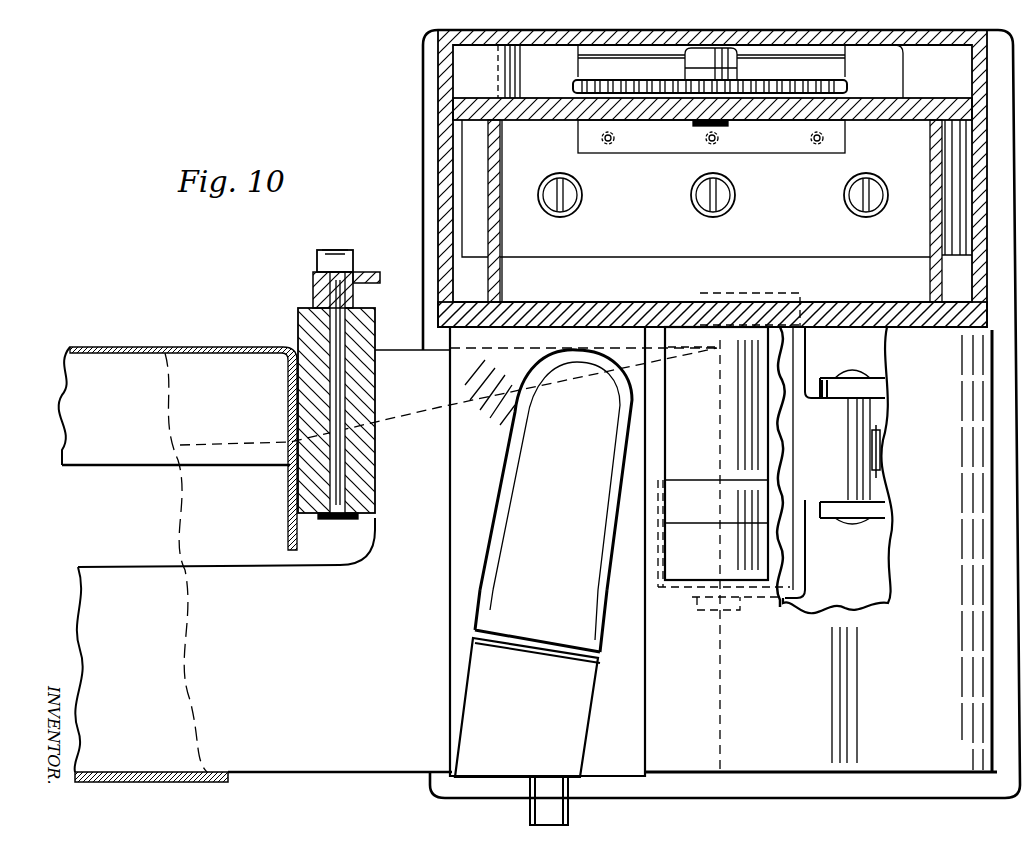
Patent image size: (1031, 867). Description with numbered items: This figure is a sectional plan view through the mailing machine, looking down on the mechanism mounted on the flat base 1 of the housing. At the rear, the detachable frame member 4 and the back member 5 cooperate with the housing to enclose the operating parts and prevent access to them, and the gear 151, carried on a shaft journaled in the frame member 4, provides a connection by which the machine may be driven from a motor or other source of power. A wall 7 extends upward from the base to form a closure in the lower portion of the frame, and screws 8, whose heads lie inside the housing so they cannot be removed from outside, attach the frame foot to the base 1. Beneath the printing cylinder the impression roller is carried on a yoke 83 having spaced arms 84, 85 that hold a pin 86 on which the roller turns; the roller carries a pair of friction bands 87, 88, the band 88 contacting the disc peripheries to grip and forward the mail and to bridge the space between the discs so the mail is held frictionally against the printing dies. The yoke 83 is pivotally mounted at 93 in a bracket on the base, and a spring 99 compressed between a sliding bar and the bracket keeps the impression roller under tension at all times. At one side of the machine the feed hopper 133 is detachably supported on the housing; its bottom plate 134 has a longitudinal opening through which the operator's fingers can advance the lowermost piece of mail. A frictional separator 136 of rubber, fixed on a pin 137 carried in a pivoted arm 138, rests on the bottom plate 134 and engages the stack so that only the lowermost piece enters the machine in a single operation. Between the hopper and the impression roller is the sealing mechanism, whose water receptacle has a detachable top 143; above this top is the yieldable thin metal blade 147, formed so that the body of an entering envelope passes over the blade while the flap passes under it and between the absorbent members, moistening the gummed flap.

The flat base 1 is at (822, 783).
The frame member 4 is at (548, 108).
The back member 5 is at (506, 46).
The wall 7 is at (605, 303).
The screws 8 is at (707, 193).
The yoke 83 is at (815, 433).
The arm 84 is at (762, 585).
The arm 85 is at (770, 296).
The pin 86 is at (730, 645).
The friction band 87 is at (707, 558).
The friction band 88 is at (750, 370).
The pivot 93 is at (848, 378).
The spring 99 is at (878, 447).
The feed hopper 133 is at (163, 347).
The bottom plate 134 is at (286, 626).
The frictional separator 136 is at (312, 332).
The pin 137 is at (320, 282).
The arm 138 is at (370, 267).
The detachable top 143 is at (625, 652).
The yieldable thin metal blade 147 is at (590, 497).
The gear 151 is at (838, 82).